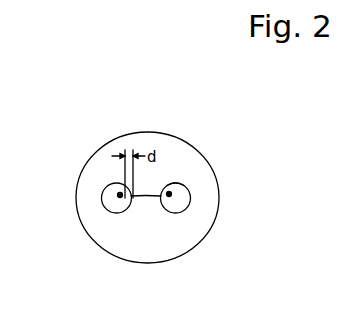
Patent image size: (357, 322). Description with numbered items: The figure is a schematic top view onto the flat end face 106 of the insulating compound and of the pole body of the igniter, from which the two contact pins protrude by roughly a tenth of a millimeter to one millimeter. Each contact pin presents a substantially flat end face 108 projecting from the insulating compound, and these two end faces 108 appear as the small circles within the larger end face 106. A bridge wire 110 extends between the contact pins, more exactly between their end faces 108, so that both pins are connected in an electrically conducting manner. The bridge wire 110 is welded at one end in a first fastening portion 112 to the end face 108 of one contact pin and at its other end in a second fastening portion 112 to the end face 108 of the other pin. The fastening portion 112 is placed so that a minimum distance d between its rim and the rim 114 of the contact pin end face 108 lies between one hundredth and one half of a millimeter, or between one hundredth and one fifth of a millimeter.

The end face 106 is at (103, 243).
The end face of contact pin 108 is at (103, 193).
The bridge wire 110 is at (149, 201).
The fastening portion 112 is at (120, 195).
The rim of end face 114 is at (172, 185).